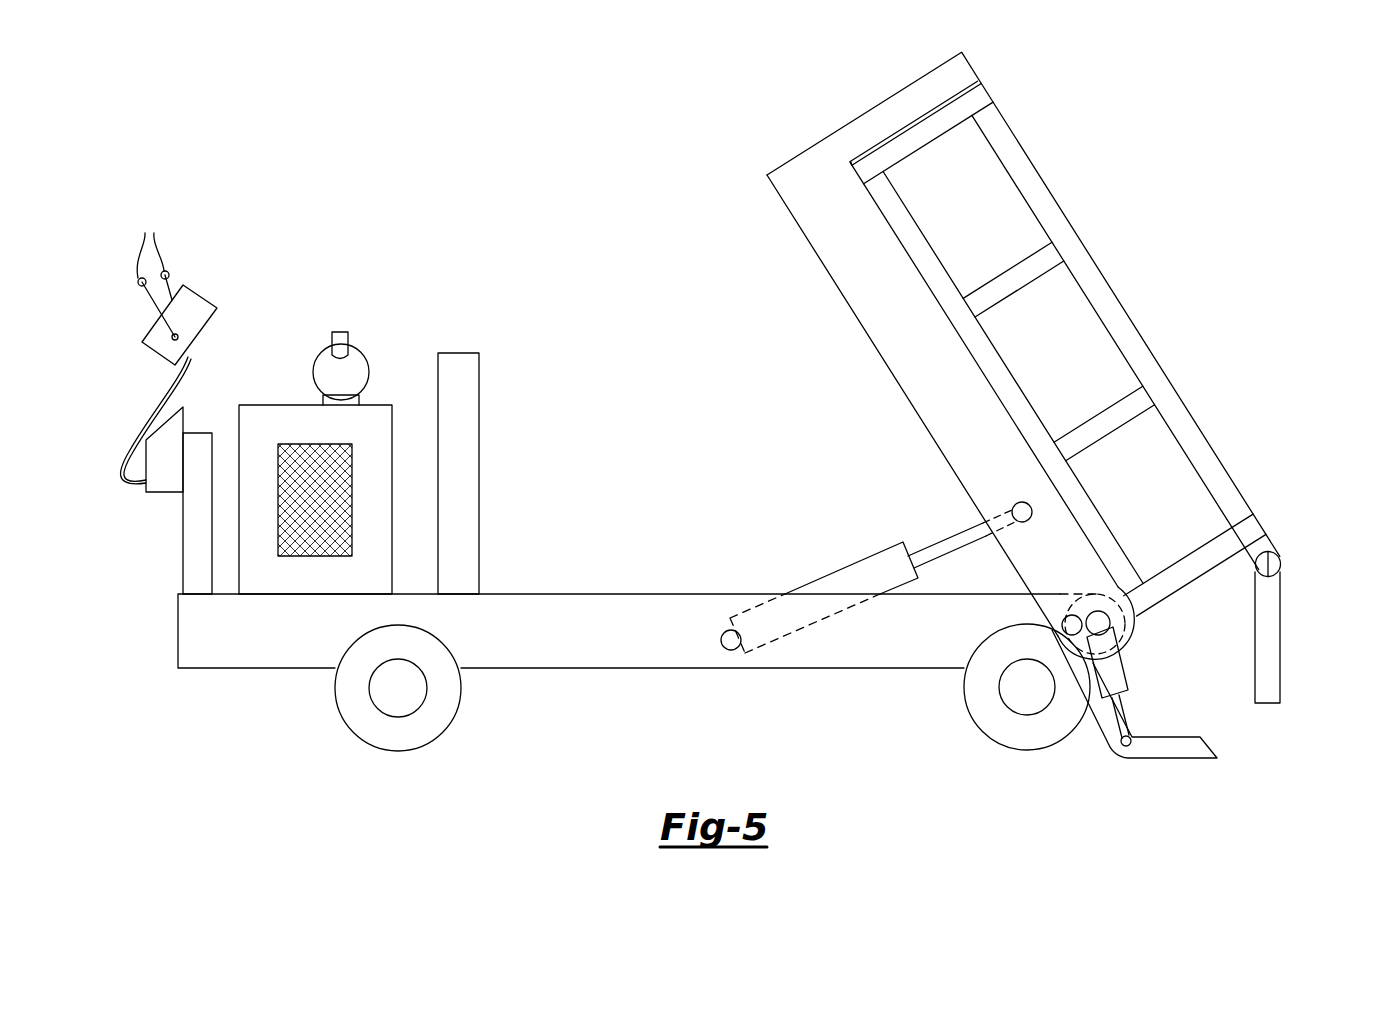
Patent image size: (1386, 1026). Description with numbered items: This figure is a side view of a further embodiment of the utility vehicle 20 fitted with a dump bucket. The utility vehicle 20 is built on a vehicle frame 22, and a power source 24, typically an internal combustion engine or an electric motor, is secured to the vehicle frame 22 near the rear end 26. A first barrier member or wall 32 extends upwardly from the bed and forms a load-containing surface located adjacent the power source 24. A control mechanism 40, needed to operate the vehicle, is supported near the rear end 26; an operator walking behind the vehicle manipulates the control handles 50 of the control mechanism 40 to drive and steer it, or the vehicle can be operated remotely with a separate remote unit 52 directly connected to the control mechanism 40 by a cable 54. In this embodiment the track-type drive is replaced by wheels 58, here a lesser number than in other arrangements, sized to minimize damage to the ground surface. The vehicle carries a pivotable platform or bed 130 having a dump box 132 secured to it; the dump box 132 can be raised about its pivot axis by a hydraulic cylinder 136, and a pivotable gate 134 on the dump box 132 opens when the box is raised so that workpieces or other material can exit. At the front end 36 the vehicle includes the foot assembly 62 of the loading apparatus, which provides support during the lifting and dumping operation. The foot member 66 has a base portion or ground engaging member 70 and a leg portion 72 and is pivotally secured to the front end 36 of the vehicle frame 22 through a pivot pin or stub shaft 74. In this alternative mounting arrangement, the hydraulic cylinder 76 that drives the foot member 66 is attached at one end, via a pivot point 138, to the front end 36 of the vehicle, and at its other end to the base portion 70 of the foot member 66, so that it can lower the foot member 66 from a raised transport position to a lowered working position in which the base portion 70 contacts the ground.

The utility vehicle 20 is at (616, 326).
The vehicle frame 22 is at (231, 676).
The power source 24 is at (266, 403).
The rear end 26 is at (200, 640).
The first barrier member or wall 32 is at (458, 378).
The front end 36 is at (1138, 620).
The control mechanism 40 is at (165, 493).
The control handles 50 is at (156, 273).
The remote unit 52 is at (193, 298).
The cable 54 is at (178, 382).
The wheels 58 is at (392, 732).
The foot assembly 62 is at (1117, 770).
The first foot member 66 is at (1141, 728).
The base portion or ground engaging member 70 is at (1180, 750).
The leg portion 72 is at (1103, 724).
The pivot pins or stub shafts 74 is at (1066, 616).
The hydraulic cylinder 76 is at (1115, 672).
The pivotable platform or bed 130 is at (920, 385).
The dump box 132 is at (1102, 258).
The pivotable gate 134 is at (1268, 640).
The hydraulic cylinder 136 is at (827, 576).
The pivot point 138 is at (1105, 612).